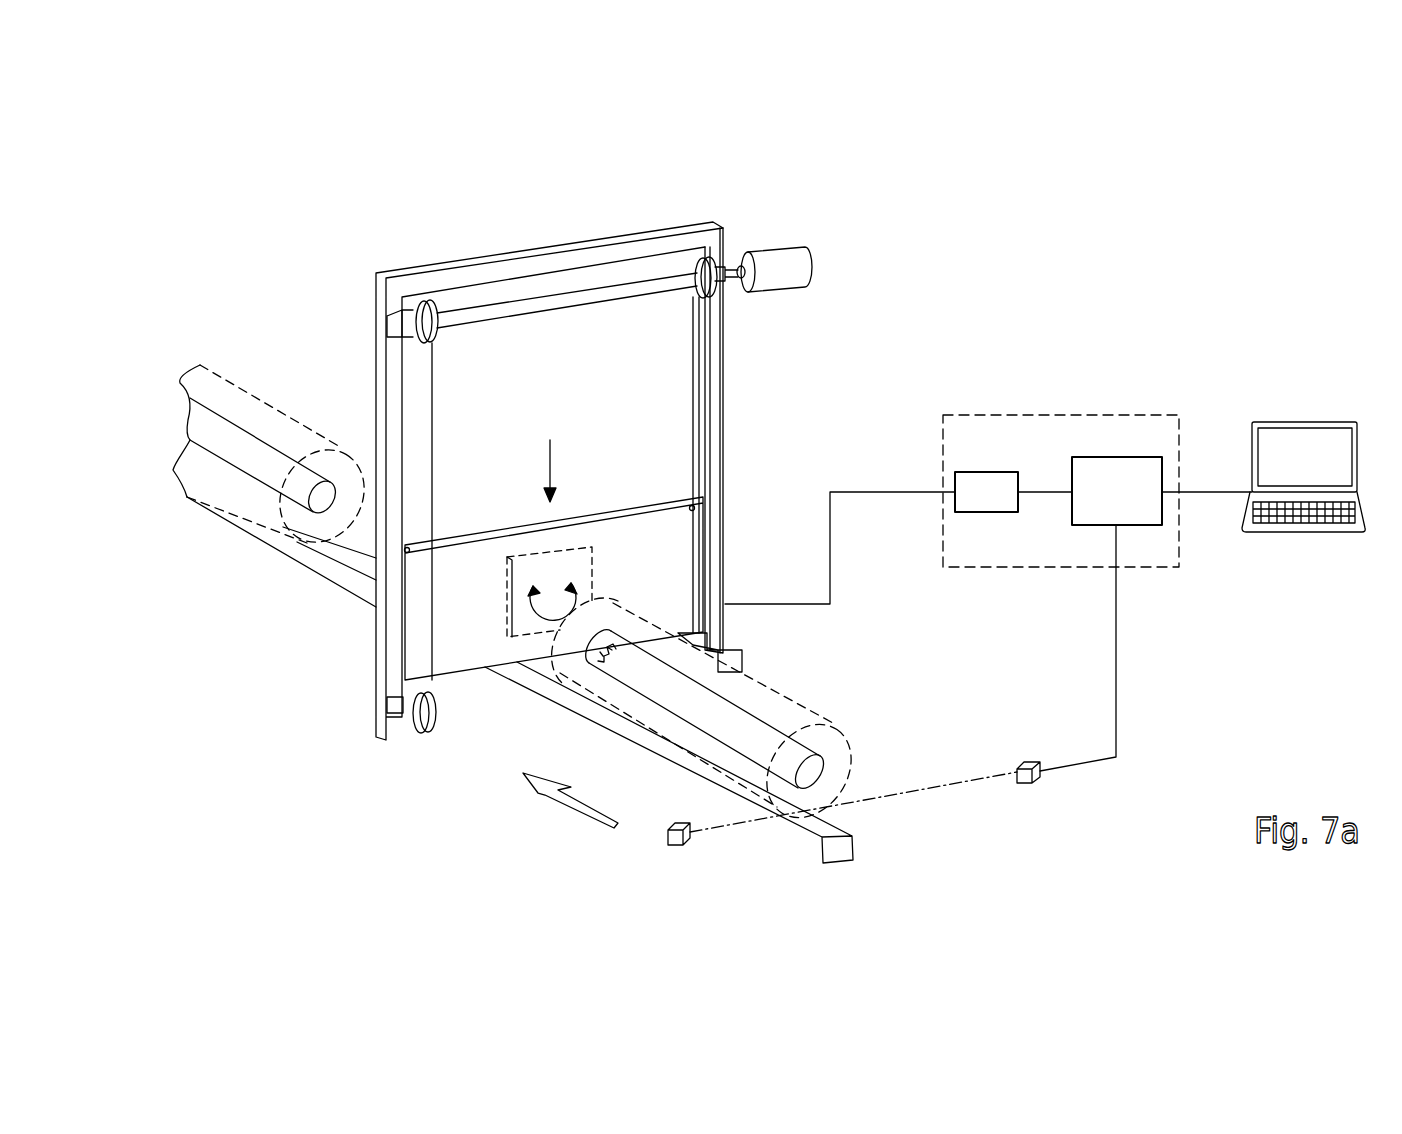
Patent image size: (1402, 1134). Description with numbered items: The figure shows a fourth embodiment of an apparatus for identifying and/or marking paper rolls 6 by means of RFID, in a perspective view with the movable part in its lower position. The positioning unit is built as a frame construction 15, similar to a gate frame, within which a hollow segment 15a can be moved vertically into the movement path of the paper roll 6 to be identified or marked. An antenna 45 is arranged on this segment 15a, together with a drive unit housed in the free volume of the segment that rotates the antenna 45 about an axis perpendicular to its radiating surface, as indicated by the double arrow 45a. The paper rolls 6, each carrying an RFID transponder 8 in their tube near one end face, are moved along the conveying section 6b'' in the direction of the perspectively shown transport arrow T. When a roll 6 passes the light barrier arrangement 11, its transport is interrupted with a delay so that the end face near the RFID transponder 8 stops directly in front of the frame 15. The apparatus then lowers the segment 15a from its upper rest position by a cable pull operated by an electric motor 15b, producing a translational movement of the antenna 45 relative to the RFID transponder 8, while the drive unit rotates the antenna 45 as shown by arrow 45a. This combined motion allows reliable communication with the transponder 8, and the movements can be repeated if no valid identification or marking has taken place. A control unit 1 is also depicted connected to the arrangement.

The control unit 1 is at (1058, 415).
The paper roll 6 is at (773, 690).
The conveying section 6b'' is at (559, 680).
The RFID transponder 8 is at (597, 665).
The light barrier arrangement 11 is at (1035, 787).
The frame construction 15 is at (624, 184).
The segment 15a is at (683, 545).
The electric motor 15b is at (780, 263).
The antenna 45 is at (533, 567).
The double arrow 45a is at (535, 612).
The transport arrow T is at (577, 808).